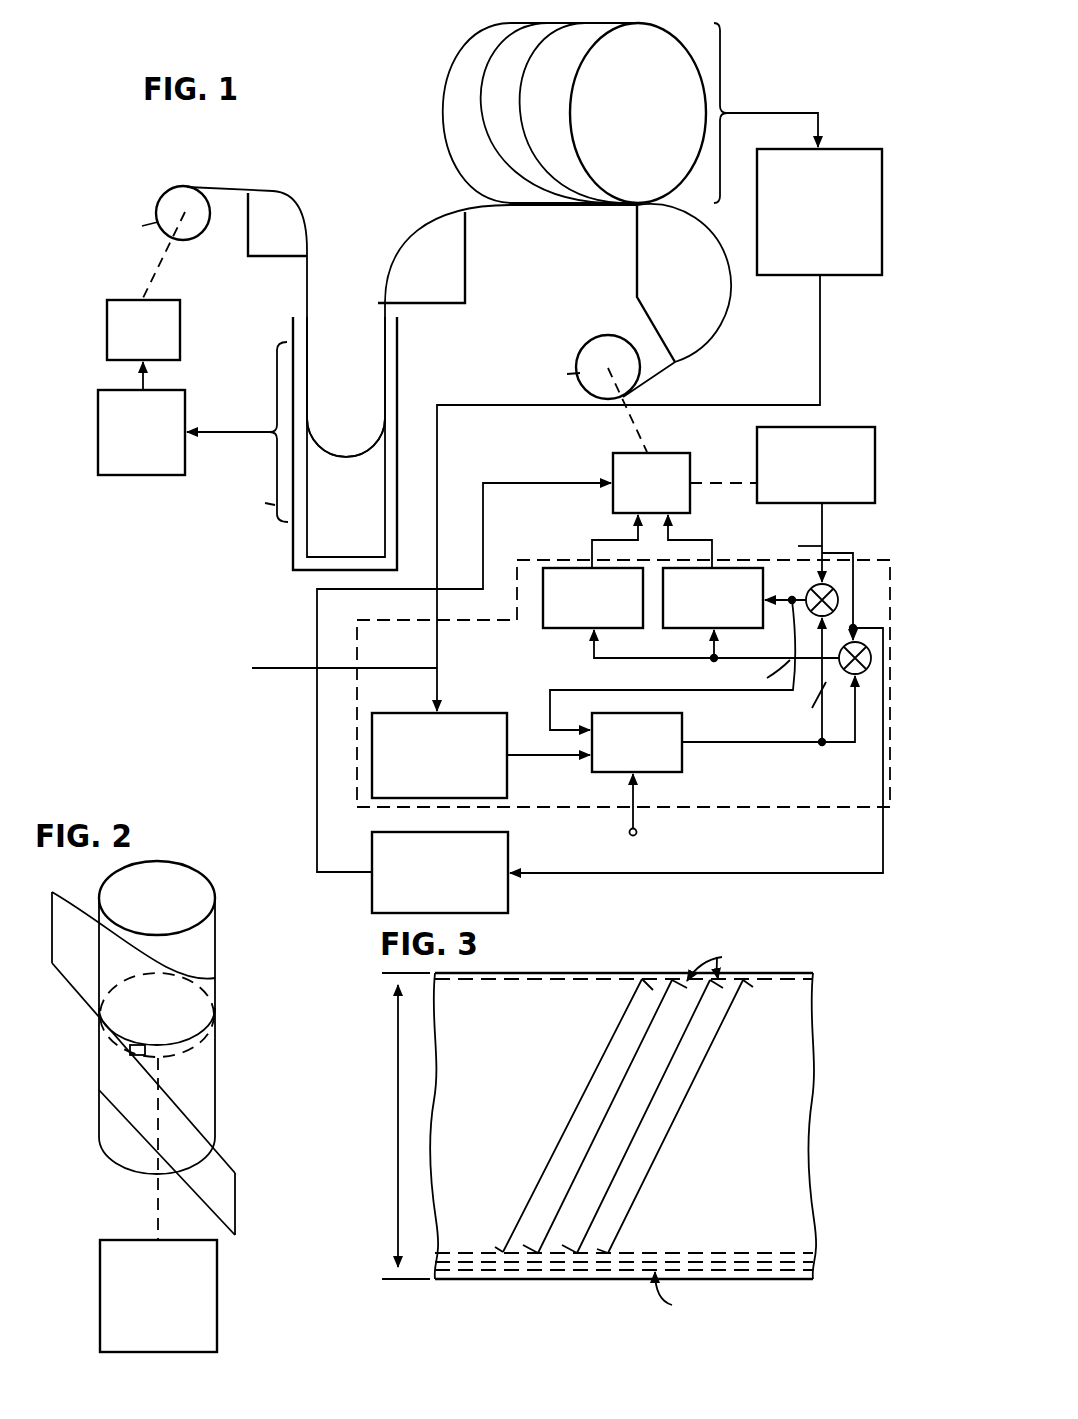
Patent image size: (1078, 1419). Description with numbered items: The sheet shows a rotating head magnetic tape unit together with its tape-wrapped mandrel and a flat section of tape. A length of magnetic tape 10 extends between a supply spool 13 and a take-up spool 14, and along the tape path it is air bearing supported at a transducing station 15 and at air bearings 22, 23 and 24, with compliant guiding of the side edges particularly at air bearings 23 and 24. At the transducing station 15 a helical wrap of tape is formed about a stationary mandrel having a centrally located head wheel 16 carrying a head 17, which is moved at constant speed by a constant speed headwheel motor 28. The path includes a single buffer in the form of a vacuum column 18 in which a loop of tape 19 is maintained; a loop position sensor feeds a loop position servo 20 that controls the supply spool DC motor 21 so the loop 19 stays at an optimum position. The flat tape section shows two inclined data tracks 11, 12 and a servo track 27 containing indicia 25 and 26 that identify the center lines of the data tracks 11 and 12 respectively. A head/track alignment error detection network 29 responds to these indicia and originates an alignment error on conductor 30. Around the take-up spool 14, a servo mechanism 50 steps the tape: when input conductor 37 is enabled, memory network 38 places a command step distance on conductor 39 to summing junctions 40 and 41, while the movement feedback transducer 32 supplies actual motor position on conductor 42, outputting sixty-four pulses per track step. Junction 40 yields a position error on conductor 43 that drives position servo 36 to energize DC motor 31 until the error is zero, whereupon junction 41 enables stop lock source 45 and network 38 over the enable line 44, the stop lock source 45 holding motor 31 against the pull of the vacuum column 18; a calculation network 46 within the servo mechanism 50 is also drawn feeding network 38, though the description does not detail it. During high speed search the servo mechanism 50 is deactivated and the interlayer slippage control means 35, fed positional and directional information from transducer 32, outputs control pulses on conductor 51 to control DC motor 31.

In FIG. 1, the magnetic tape 10 is at (216, 189).
In FIG. 2, the magnetic tape 10 is at (83, 983).
In FIG. 3, the magnetic tape 10 is at (814, 1123).
In FIG. 3, the data track 11 is at (650, 1108).
In FIG. 3, the data track 12 is at (620, 1086).
In FIG. 1, the supply spool 13 is at (186, 196).
In FIG. 1, the take-up spool 14 is at (597, 346).
In FIG. 1, the transducing station 15 is at (670, 17).
In FIG. 2, the transducing station 15 is at (246, 952).
In FIG. 2, the head wheel 16 is at (173, 1057).
In FIG. 2, the head 17 is at (128, 1053).
In FIG. 1, the vacuum column 18 is at (293, 558).
In FIG. 1, the loop of tape 19 is at (350, 458).
In FIG. 1, the loop position servo 20 is at (98, 423).
In FIG. 1, the supply spool DC motor 21 is at (107, 328).
In FIG. 1, the air bearing 22 is at (277, 247).
In FIG. 1, the air bearing 23 is at (465, 277).
In FIG. 1, the air bearing 24 is at (648, 243).
In FIG. 3, the servo track indicium 25 is at (557, 1267).
In FIG. 3, the servo track indicium 26 is at (525, 1272).
In FIG. 3, the servo track 27 is at (455, 1268).
In FIG. 2, the constant speed headwheel motor 28 is at (145, 1240).
In FIG. 1, the head/track alignment error detection network 29 is at (840, 149).
In FIG. 1, the conductor 30 is at (820, 331).
In FIG. 1, the DC motor 31 is at (613, 465).
In FIG. 1, the movement feedback transducer 32 is at (840, 427).
In FIG. 1, the interlayer slippage control means 35 is at (508, 843).
In FIG. 1, the position servo 36 is at (575, 630).
In FIG. 1, the input conductor 37 is at (629, 829).
In FIG. 1, the memory network 38 is at (682, 722).
In FIG. 1, the conductor 39 is at (743, 744).
In FIG. 1, the summing junction 40 is at (800, 690).
In FIG. 1, the summing junction 41 is at (839, 596).
In FIG. 1, the conductor 42 is at (822, 545).
In FIG. 1, the conductor 43 is at (686, 665).
In FIG. 1, the enable-step executed line 44 is at (716, 643).
In FIG. 1, the stop lock source 45 is at (763, 580).
In FIG. 1, the delta S calculation network 46 is at (460, 712).
In FIG. 1, the servo mechanism 50 is at (355, 710).
In FIG. 1, the conductor 51 is at (317, 815).